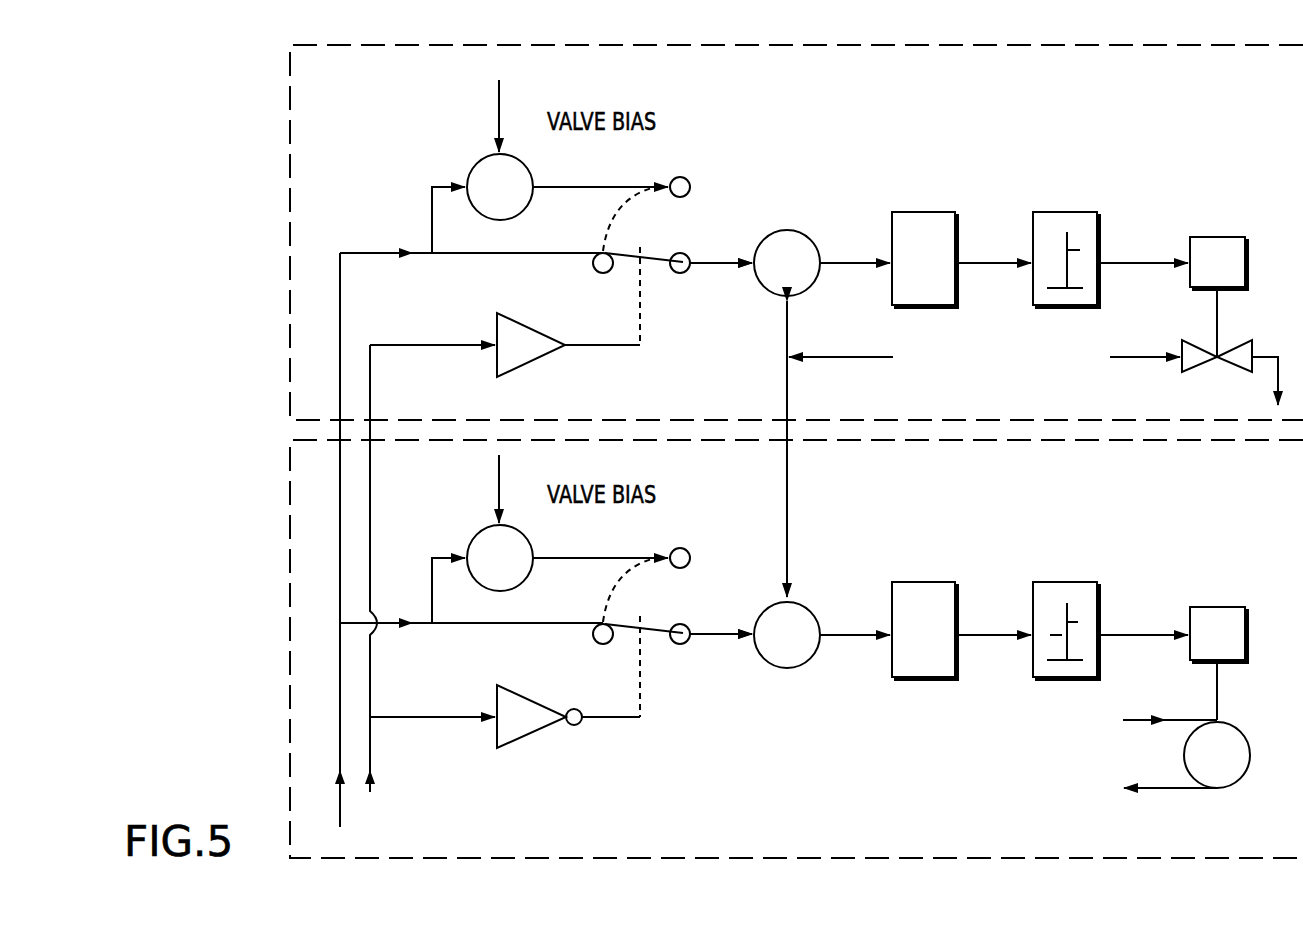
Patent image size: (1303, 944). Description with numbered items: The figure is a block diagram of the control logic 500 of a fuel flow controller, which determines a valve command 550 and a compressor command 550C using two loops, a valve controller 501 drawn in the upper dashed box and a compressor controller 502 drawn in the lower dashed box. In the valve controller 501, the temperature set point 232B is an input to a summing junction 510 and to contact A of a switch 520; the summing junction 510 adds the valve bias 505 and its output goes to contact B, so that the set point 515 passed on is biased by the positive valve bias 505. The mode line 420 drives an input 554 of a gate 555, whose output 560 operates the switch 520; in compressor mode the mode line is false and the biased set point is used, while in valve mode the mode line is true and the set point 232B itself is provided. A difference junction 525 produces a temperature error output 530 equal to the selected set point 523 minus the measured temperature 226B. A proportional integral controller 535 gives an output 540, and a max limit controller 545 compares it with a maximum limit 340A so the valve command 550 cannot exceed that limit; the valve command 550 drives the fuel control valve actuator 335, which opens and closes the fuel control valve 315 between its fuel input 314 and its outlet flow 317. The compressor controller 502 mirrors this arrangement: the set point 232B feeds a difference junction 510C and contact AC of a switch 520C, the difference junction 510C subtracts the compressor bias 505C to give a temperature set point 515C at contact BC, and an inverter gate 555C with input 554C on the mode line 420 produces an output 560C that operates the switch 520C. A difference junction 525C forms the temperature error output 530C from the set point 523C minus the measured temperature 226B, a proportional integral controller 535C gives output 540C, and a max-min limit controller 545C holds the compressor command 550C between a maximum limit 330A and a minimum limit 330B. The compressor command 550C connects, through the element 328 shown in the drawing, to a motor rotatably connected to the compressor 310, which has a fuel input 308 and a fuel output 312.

The control logic 500 is at (216, 306).
The valve controller 501 is at (1018, 96).
The compressor controller 502 is at (1018, 474).
The valve bias 505 is at (499, 106).
The summing junction 510 is at (478, 168).
The set point 515 is at (540, 186).
The switch 520 is at (652, 257).
The set point 523 is at (748, 270).
The difference junction 525 is at (812, 242).
The temperature error output 530 is at (816, 272).
The proportional integral controller 535 is at (923, 212).
The output of proportional integral controller 540 is at (958, 257).
The max limit controller 545 is at (1040, 305).
The valve command output 550 is at (1127, 262).
The fuel control valve actuator 335 is at (1196, 292).
The maximum limit 340A is at (1084, 250).
The fuel input 314 is at (1138, 357).
The fuel control valve 315 is at (1195, 372).
The outlet flow 317 is at (1276, 402).
The input of gate 554 is at (497, 340).
The gate 555 is at (524, 366).
The output of gate 560 is at (617, 349).
The measured temperature 226B is at (872, 449).
The compressor bias 505C is at (499, 481).
The difference junction 510C is at (478, 541).
The temperature set point 515C is at (540, 557).
The switch 520C is at (652, 628).
The set point 523C is at (748, 642).
The difference junction 525C is at (812, 614).
The temperature error output 530C is at (816, 665).
The proportional integral controller 535C is at (923, 582).
The output of proportional integral controller 540C is at (958, 628).
The max-min limit controller 545C is at (1046, 680).
The compressor command output 550C is at (1125, 632).
The maximum limit 330A is at (1083, 618).
The minimum limit 330B is at (1048, 637).
The pump controller 328 is at (1198, 662).
The fuel input 308 is at (1172, 722).
The compressor 310 is at (1237, 768).
The fuel output 312 is at (1157, 795).
The input of inverter gate 554C is at (497, 713).
The inverter gate 555C is at (527, 736).
The switch control signal 560C is at (635, 720).
The mode line 420 is at (370, 745).
The temperature set point 232B is at (340, 812).
The contact A of switch A is at (600, 273).
The contact B of switch B is at (683, 177).
The contact AC of switch AC is at (601, 644).
The contact BC of switch BC is at (683, 549).